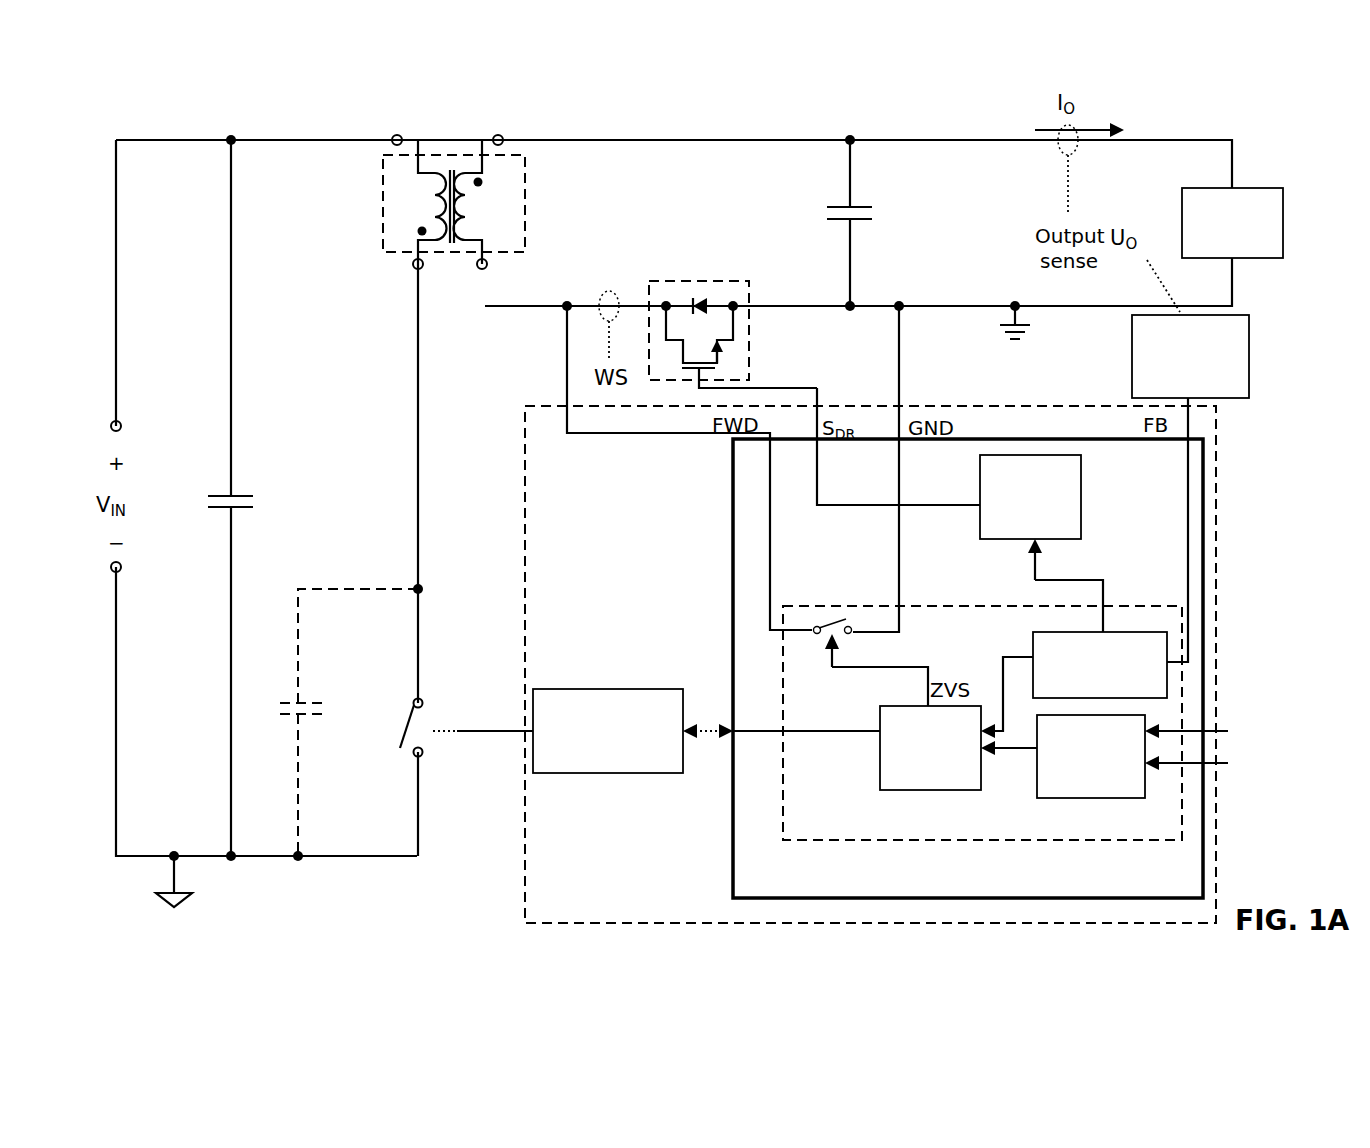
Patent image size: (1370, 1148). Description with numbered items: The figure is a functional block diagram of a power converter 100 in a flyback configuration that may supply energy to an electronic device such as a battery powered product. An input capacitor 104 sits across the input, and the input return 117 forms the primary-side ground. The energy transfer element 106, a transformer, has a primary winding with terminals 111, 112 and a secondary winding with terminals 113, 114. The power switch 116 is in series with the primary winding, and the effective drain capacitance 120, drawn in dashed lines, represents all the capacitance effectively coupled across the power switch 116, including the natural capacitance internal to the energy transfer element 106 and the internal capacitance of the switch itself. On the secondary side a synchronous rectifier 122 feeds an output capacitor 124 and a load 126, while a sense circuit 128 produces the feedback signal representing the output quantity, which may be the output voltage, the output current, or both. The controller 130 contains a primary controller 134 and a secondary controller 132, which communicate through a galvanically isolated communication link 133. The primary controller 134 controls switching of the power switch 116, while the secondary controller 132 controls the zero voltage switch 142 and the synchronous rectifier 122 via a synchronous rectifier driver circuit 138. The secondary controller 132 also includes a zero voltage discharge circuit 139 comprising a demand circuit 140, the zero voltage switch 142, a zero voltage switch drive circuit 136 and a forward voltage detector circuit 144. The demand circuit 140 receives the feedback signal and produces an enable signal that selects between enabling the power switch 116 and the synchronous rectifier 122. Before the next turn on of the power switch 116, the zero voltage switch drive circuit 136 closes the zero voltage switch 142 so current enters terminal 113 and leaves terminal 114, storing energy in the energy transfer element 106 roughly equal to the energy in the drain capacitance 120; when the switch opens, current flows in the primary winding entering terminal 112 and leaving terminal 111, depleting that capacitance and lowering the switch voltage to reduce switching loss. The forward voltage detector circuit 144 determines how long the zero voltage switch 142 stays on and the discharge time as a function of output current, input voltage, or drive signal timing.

The power converter 100 is at (1252, 63).
The input capacitor 104 is at (234, 494).
The energy transfer element 106 is at (445, 154).
The terminal 111 is at (396, 133).
The terminal 112 is at (412, 265).
The terminal 113 is at (499, 133).
The terminal 114 is at (489, 265).
The power switch 116 is at (416, 740).
The input return 117 is at (158, 906).
The effective drain capacitance 120 is at (284, 700).
The synchronous rectifier 122 is at (750, 348).
The output capacitor 124 is at (794, 210).
The load 126 is at (1255, 187).
The sense circuit 128 is at (1250, 358).
The controller 130 is at (525, 923).
The secondary controller 132 is at (733, 852).
The communication link 133 is at (712, 736).
The primary controller 134 is at (612, 774).
The ZVS drive circuit 136 is at (879, 797).
The synchronous rectifier driver circuit 138 is at (980, 540).
The ZV discharge circuit 139 is at (1182, 840).
The demand circuit 140 is at (1074, 685).
The zero voltage switch 142 is at (816, 650).
The forward voltage detector circuit 144 is at (1147, 798).